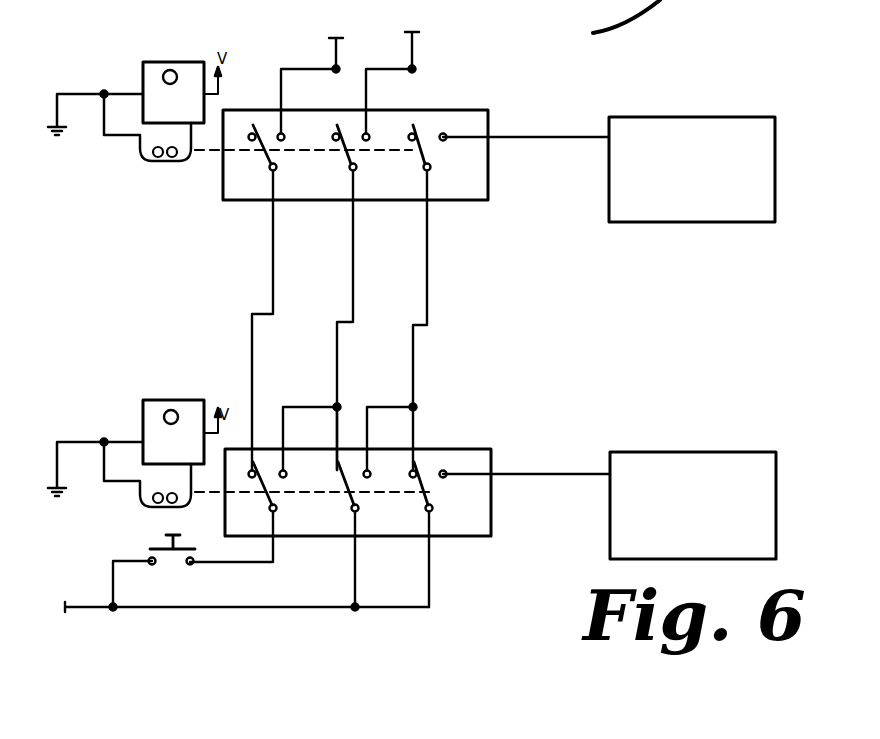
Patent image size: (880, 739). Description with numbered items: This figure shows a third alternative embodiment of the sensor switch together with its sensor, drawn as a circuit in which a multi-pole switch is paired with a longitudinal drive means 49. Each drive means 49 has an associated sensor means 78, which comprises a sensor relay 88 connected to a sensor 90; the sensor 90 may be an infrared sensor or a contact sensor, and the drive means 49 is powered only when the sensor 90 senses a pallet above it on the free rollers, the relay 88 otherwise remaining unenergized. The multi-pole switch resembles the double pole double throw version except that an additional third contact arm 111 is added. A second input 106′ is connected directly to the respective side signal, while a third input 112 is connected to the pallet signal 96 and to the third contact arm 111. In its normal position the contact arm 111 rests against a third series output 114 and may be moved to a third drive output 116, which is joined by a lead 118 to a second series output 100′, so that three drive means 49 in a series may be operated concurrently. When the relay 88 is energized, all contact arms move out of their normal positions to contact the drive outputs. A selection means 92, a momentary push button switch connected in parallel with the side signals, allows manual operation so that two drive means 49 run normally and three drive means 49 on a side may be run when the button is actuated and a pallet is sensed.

The sensor means 78 is at (130, 82).
The sensor 90 is at (153, 70).
The sensor relay 88 is at (148, 158).
The longitudinal drive means 49 is at (712, 210).
The third series output 114 is at (251, 468).
The lead 118 is at (291, 406).
The second series output 100′ is at (339, 380).
The third drive output 116 is at (285, 468).
The third input 112 is at (276, 512).
The second input 106′ is at (357, 512).
The third contact arm 111 is at (185, 529).
The selection means 92 is at (180, 552).
The pallet signal 96 is at (215, 563).